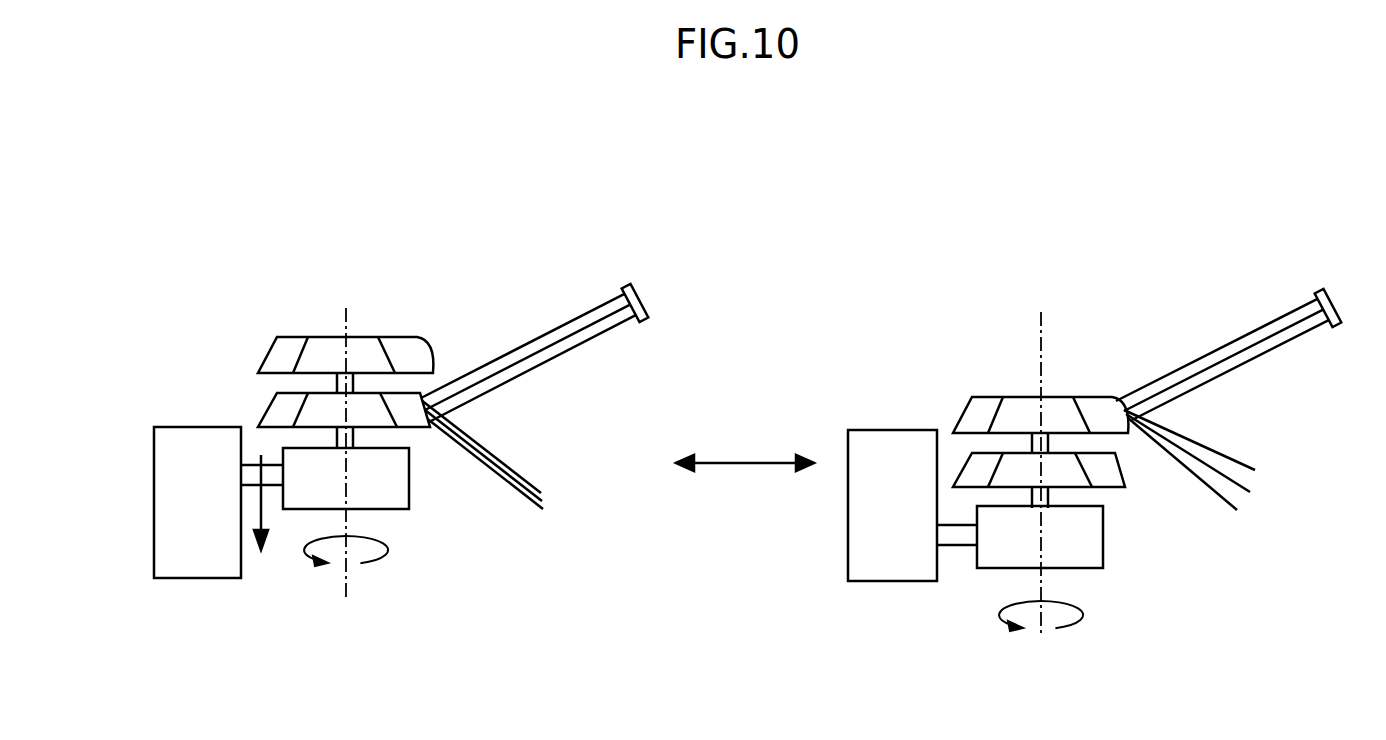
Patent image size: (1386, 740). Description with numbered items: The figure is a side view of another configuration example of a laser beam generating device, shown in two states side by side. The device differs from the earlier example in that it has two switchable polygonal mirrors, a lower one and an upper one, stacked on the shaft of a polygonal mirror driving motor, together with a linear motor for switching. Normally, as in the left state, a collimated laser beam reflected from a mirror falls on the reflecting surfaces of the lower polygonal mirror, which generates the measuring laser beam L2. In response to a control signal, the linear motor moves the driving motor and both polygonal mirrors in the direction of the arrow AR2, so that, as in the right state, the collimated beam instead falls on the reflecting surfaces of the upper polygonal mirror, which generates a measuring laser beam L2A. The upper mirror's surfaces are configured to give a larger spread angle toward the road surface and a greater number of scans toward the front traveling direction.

The arrow AR2 is at (263, 490).
The measuring laser beam L2 is at (538, 465).
The measuring laser beam L2A is at (1268, 446).